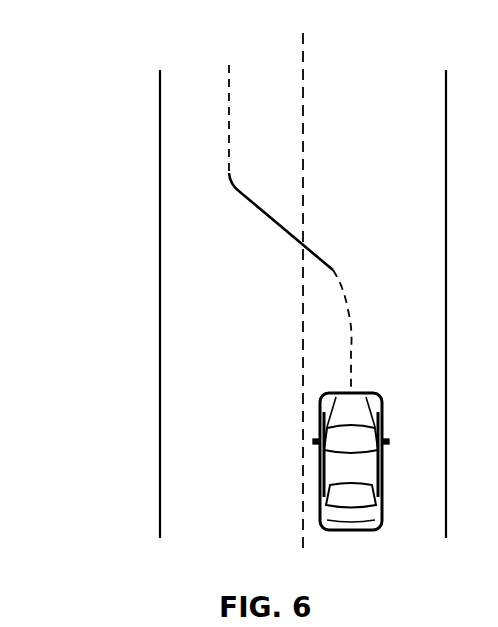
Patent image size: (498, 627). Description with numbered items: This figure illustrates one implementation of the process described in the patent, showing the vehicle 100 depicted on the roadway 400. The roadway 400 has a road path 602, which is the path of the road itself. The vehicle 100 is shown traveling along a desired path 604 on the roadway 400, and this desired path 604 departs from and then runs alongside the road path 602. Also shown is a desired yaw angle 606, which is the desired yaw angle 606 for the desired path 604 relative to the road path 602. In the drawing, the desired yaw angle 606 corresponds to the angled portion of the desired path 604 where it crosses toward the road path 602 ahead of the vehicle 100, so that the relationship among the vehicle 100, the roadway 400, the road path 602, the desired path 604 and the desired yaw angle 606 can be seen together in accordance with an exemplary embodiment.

The vehicle 100 is at (368, 391).
The roadway 400 is at (136, 179).
The road path 602 is at (304, 70).
The desired path 604 is at (182, 19).
The desired yaw angle 606 is at (257, 201).